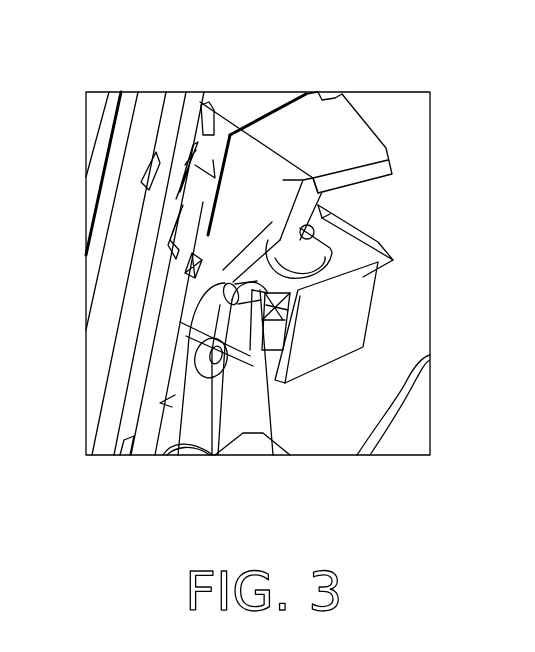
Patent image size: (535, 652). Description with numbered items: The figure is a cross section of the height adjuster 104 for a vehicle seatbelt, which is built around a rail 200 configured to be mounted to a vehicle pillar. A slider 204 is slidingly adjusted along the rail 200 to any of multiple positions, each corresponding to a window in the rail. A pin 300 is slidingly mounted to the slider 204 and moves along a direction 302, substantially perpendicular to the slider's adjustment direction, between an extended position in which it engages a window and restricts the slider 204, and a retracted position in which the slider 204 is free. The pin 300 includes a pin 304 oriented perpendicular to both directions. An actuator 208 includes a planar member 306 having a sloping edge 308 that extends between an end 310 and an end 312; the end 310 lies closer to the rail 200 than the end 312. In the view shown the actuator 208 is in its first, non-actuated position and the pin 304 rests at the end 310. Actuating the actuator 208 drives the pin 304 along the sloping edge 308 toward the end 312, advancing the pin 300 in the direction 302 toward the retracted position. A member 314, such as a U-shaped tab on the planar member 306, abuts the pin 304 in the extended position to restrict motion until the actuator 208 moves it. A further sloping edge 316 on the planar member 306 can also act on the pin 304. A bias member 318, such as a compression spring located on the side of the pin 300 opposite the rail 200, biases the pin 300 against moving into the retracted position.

The height adjuster 104 is at (412, 119).
The rail 200 is at (133, 242).
The slider 204 is at (370, 231).
The actuator 208 is at (382, 130).
The pin 300 is at (262, 238).
The direction 302 is at (272, 222).
The pin 304 is at (212, 455).
The planar member 306 is at (258, 170).
The sloping edge 308 is at (262, 258).
The end 310 is at (177, 455).
The end 312 is at (281, 220).
The member 314 is at (265, 297).
The sloping edge 316 is at (352, 213).
The bias member 318 is at (273, 455).